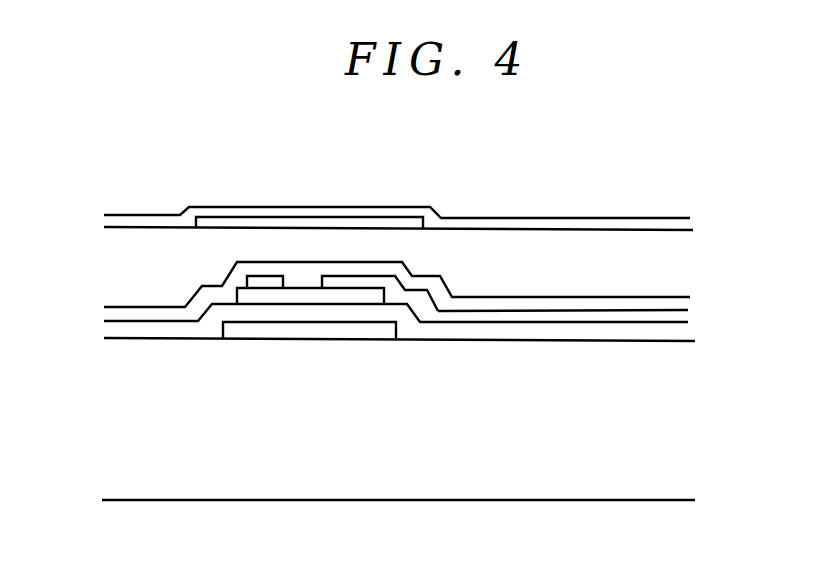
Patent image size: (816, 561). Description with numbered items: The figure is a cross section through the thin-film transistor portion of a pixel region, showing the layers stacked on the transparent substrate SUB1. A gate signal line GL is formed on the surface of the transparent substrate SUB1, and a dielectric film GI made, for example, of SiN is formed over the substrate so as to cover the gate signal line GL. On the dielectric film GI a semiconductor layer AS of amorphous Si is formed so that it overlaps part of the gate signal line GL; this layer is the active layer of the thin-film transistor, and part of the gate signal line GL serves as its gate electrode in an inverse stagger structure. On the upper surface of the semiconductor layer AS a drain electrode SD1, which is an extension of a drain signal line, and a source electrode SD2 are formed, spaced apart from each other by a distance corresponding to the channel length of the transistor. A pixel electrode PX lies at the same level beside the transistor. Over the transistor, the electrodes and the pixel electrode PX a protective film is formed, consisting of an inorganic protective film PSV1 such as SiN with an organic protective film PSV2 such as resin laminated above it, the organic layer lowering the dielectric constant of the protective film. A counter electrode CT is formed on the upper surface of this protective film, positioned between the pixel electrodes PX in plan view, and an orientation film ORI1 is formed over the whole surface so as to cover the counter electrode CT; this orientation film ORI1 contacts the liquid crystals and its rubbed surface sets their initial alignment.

The orientation film ORI1 is at (637, 218).
The counter electrode CT is at (405, 222).
The protective film PSV2 is at (672, 255).
The protective film PSV1 is at (678, 305).
The drain electrode SD1 is at (260, 277).
The source electrode SD2 is at (353, 277).
The pixel electrode PX is at (550, 318).
The semiconductor layer AS is at (240, 297).
The dielectric film GI is at (680, 333).
The gate signal line GL is at (237, 333).
The transparent substrate SUB1 is at (130, 433).